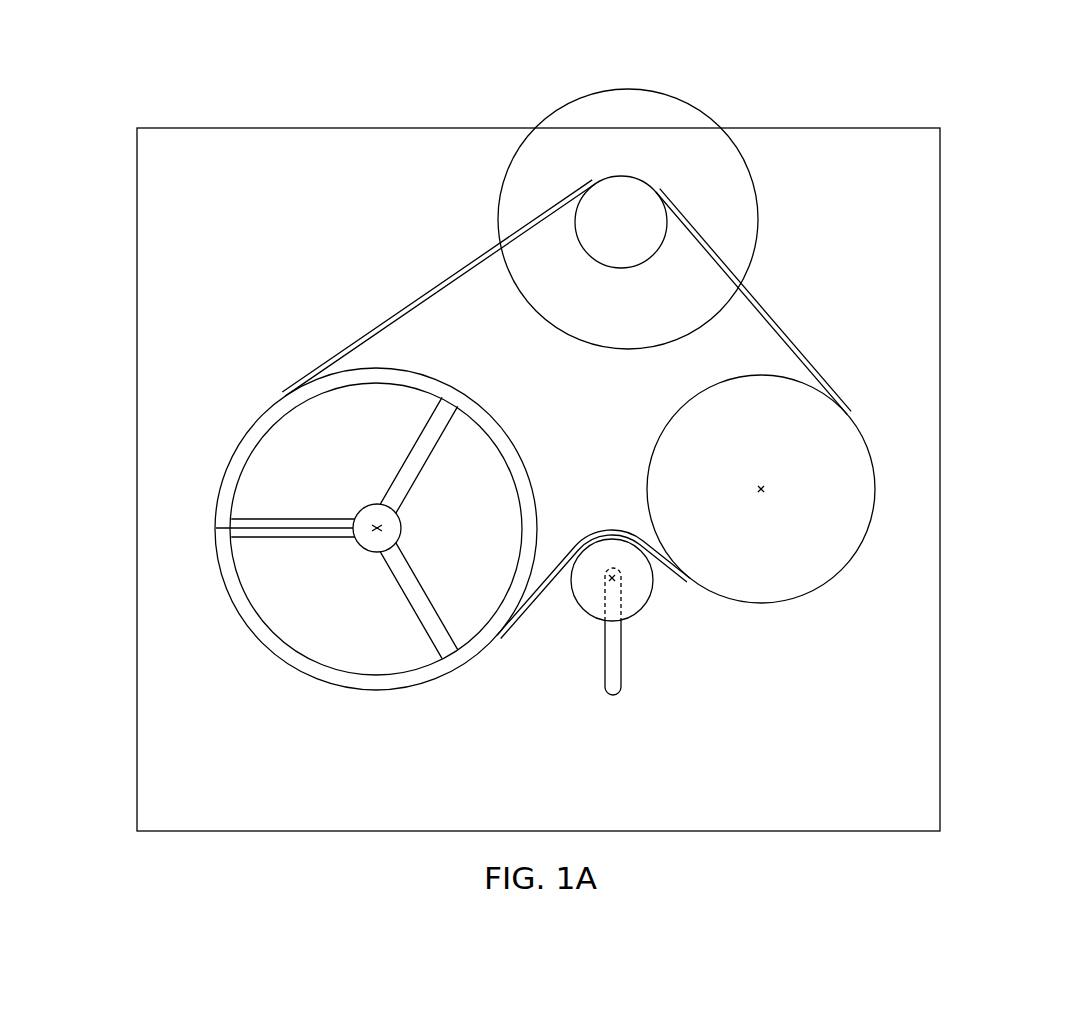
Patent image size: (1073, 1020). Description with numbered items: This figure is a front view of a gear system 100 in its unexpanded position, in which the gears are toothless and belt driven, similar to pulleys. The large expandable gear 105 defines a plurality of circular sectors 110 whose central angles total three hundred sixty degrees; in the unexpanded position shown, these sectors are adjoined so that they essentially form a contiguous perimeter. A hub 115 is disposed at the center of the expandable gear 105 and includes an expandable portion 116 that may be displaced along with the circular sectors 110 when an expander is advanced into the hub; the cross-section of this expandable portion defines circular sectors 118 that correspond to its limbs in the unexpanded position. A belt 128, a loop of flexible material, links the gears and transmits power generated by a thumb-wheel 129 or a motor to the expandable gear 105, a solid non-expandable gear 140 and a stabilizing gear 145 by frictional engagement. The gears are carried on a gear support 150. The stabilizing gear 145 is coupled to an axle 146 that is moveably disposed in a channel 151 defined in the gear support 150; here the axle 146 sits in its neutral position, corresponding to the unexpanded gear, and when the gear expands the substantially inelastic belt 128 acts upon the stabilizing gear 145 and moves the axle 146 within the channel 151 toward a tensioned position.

The gear system 100 is at (170, 113).
The expandable gear 105 is at (253, 412).
The circular sectors 110 is at (252, 570).
The hub 115 is at (353, 507).
The expandable portion 116 is at (367, 532).
The circular sectors 118 is at (390, 532).
The belt 128 is at (465, 272).
The thumb-wheel 129 is at (695, 160).
The solid non-expandable gear 140 is at (802, 515).
The stabilizing gear 145 is at (655, 592).
The axle 146 is at (612, 578).
The gear support 150 is at (845, 233).
The channel 151 is at (623, 675).